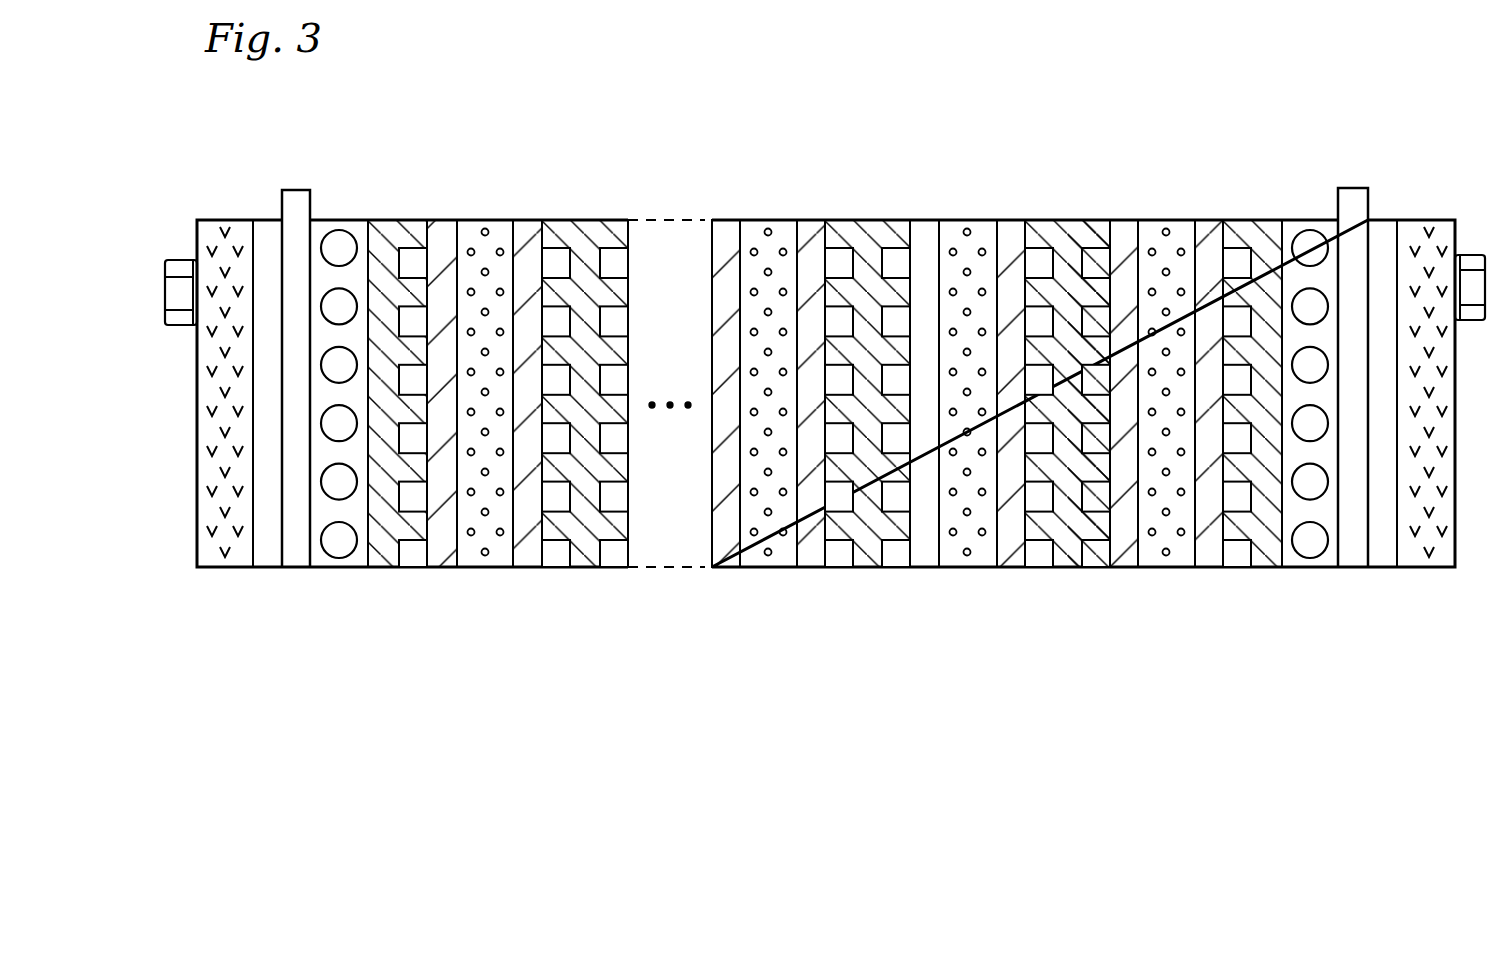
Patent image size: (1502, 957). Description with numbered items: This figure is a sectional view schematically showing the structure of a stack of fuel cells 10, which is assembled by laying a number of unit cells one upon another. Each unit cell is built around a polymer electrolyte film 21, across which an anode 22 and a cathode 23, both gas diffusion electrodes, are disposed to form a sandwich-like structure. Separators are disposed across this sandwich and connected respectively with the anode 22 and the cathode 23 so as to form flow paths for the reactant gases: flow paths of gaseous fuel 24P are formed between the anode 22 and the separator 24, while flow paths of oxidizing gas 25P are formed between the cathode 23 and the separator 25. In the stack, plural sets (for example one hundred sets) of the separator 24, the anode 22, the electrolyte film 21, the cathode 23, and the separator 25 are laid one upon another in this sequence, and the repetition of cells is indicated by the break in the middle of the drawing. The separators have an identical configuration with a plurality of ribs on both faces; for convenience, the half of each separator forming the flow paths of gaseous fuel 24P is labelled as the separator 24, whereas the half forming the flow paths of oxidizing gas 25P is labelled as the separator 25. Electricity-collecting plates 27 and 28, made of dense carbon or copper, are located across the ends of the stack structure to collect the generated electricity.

The stack of fuel cells 10 is at (1010, 71).
The electrolyte film 21 is at (480, 225).
The anode 22 is at (518, 225).
The cathode 23 is at (440, 225).
The separator 24 is at (912, 391).
The separator 25 is at (746, 391).
The flow paths of gaseous fuel 24P is at (1033, 568).
The flow paths of oxidizing gas 25P is at (895, 568).
The electricity-collecting plate 27 is at (1352, 198).
The electricity-collecting plate 28 is at (294, 200).